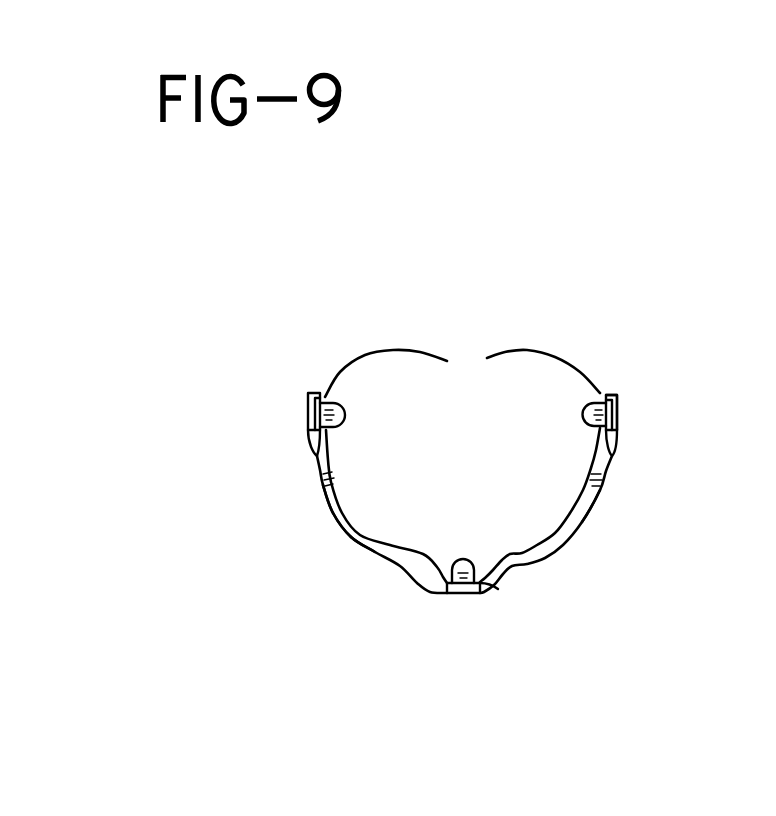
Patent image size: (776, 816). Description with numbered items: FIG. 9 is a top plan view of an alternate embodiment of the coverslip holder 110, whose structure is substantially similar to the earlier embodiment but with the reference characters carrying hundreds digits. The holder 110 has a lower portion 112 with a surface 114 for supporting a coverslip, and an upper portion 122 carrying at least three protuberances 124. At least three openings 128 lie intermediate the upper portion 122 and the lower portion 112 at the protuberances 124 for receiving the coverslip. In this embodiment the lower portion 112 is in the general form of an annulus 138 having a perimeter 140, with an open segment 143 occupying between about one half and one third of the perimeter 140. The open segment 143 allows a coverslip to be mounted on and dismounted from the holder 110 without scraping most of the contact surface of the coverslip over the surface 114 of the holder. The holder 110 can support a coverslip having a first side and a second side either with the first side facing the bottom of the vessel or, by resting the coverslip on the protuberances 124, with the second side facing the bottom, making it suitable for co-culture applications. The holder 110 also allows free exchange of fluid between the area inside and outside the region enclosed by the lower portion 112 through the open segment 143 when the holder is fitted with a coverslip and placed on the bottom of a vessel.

The holder 110 is at (348, 300).
The lower portion 112 is at (380, 558).
The surface 114 is at (587, 512).
The upper portion 122 is at (618, 394).
The protuberances 124 is at (323, 397).
The openings 128 is at (316, 455).
The annulus 138 is at (324, 492).
The perimeter 140 is at (354, 538).
The open segment 143 is at (487, 358).